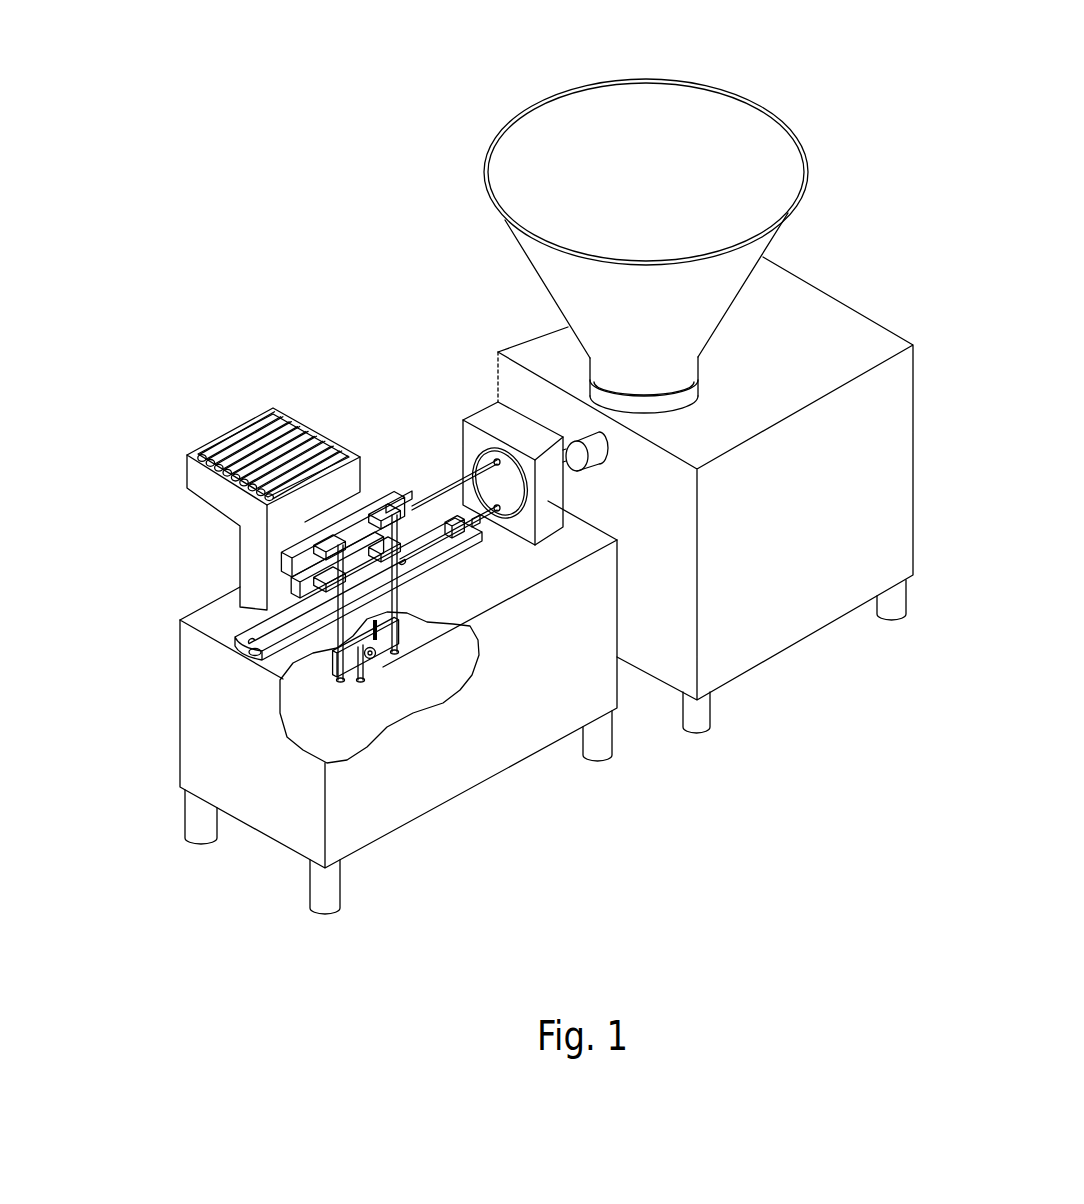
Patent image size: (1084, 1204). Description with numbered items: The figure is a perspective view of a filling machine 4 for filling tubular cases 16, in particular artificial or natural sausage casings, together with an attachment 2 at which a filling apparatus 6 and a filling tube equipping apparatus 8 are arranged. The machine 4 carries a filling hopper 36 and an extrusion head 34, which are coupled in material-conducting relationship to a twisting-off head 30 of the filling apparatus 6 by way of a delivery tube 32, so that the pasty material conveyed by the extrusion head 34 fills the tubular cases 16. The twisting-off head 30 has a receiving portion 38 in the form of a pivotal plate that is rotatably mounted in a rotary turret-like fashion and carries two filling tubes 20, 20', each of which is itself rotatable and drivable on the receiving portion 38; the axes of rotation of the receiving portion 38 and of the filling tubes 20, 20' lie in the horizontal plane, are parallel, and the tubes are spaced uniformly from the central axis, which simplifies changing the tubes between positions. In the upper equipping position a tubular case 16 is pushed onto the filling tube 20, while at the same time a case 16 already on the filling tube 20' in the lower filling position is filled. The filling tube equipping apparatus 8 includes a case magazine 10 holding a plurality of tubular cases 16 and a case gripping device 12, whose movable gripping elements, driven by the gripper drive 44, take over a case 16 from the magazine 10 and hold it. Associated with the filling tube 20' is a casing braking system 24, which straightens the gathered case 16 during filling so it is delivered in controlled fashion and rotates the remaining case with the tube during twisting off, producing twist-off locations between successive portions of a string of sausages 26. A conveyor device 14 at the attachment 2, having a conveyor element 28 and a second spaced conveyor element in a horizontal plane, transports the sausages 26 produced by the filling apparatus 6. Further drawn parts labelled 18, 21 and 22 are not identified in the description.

The attachment 2 is at (157, 404).
The filling machine 4 is at (866, 280).
The filling apparatus 6 is at (450, 579).
The filling tube equipping apparatus 8 is at (330, 522).
The case magazine 10 is at (240, 448).
The case gripping device 12 is at (298, 569).
The conveyor device 14 is at (224, 634).
The tubular cases 16 is at (287, 412).
The push rod coupler 18 is at (412, 508).
The filling tube 20 is at (452, 449).
The filling tube 20' is at (504, 725).
The coupling block 21 is at (462, 530).
The coupling ring 22 is at (478, 522).
The casing braking system 24 is at (403, 580).
The sausages 26 is at (240, 641).
The conveyor element 28 is at (252, 657).
The twisting-off head 30 is at (487, 422).
The delivery tube 32 is at (573, 462).
The extrusion head 34 is at (592, 443).
The filling hopper 36 is at (630, 167).
The receiving portion 38 is at (503, 493).
The gripper drive 44 is at (372, 660).